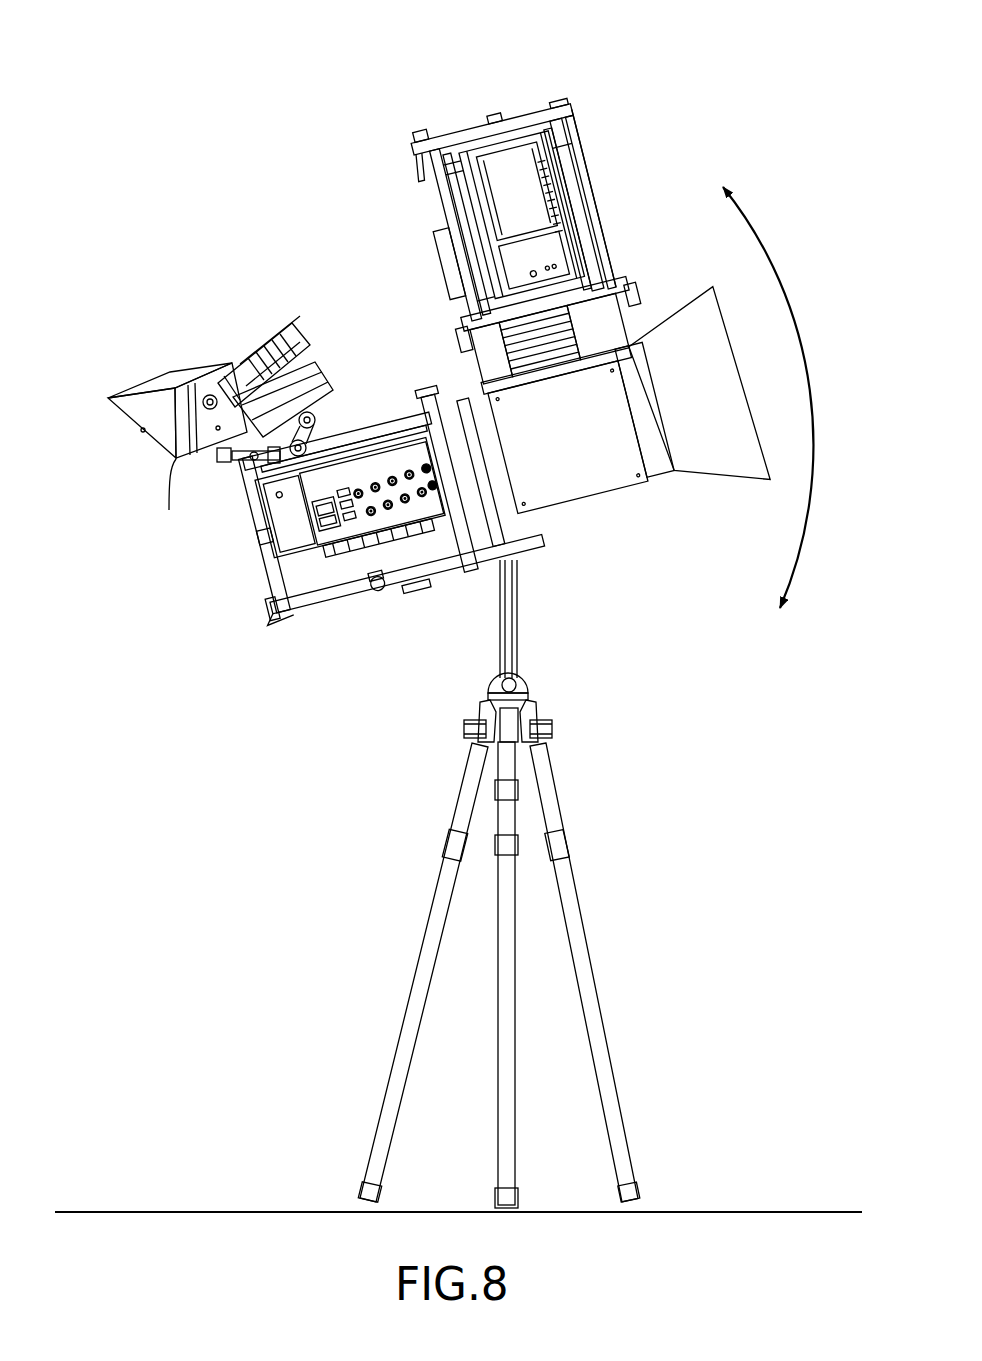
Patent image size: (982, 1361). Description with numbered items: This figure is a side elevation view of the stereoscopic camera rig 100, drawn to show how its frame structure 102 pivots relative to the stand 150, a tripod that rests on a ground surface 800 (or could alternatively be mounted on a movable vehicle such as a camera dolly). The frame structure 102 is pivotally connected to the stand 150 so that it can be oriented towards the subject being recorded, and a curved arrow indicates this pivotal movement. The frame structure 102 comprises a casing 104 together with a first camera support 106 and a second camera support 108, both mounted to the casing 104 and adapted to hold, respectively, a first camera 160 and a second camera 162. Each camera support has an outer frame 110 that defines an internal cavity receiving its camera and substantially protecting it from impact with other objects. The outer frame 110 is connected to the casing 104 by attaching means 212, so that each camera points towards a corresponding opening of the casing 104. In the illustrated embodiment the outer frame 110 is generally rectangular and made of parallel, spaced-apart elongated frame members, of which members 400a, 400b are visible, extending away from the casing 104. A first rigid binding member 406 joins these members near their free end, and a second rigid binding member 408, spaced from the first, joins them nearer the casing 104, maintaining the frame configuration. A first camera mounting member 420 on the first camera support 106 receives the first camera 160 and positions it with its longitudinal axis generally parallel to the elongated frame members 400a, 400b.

The stereoscopic camera rig 100 is at (139, 153).
The frame structure 102 is at (227, 247).
The casing 104 is at (619, 436).
The first camera support 106 is at (384, 543).
The second camera support 108 is at (522, 188).
The outer frame 110 is at (600, 190).
The stand 150 is at (604, 894).
The first camera 160 is at (373, 492).
The second camera 162 is at (511, 182).
The attaching means 212 is at (629, 345).
The elongated frame member 400a is at (452, 207).
The elongated frame member 400b is at (580, 243).
The first rigid binding member 406 is at (438, 150).
The second rigid binding member 408 is at (462, 320).
The first camera mounting member 420 is at (378, 590).
The ground surface 800 is at (710, 1206).